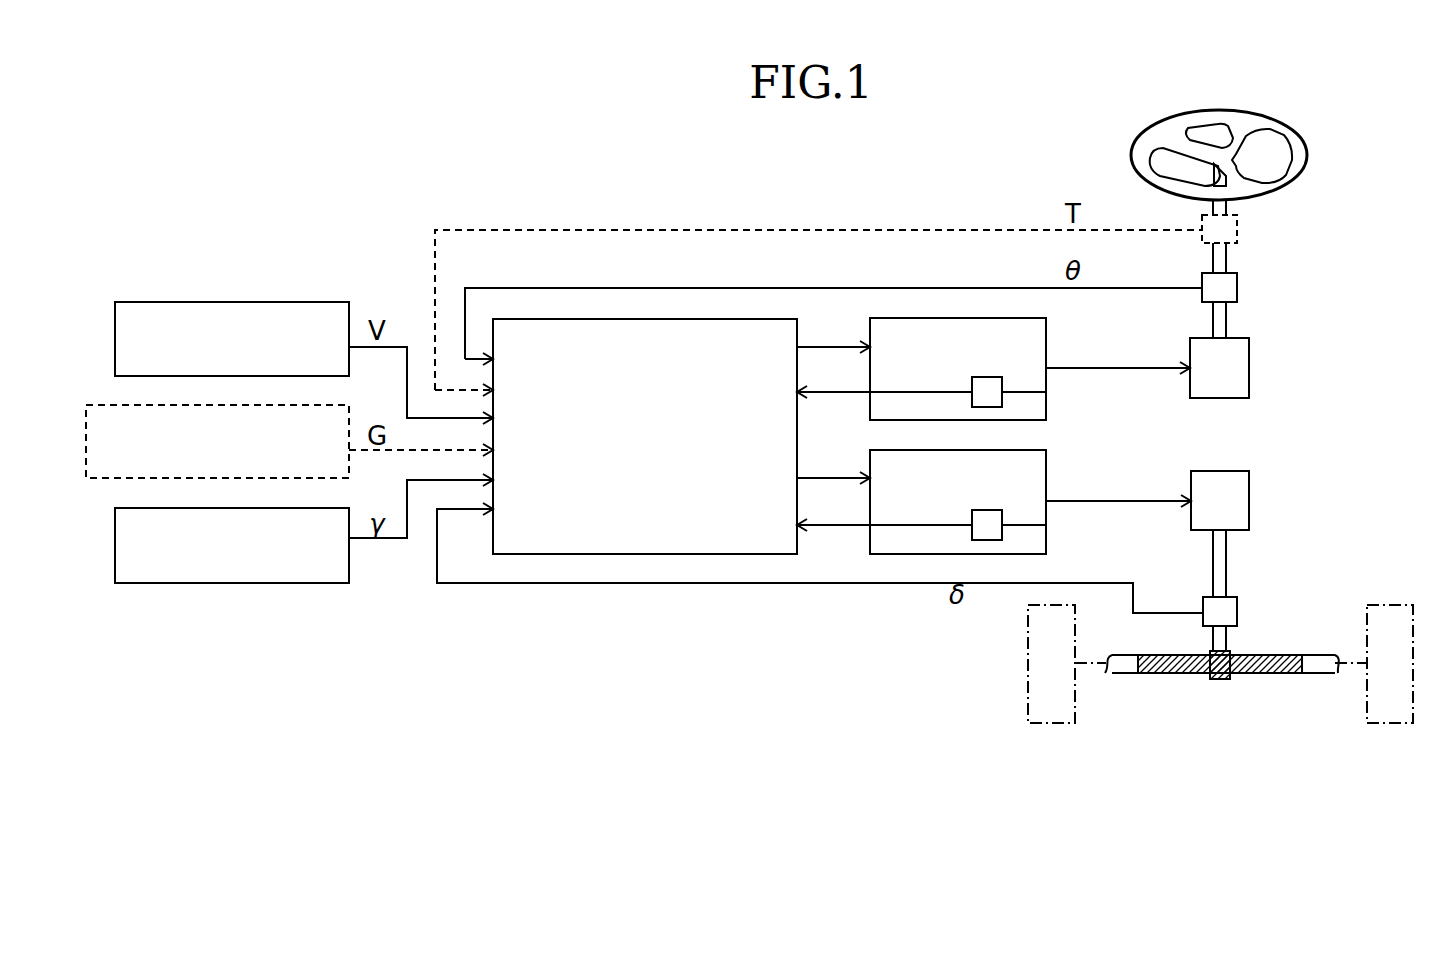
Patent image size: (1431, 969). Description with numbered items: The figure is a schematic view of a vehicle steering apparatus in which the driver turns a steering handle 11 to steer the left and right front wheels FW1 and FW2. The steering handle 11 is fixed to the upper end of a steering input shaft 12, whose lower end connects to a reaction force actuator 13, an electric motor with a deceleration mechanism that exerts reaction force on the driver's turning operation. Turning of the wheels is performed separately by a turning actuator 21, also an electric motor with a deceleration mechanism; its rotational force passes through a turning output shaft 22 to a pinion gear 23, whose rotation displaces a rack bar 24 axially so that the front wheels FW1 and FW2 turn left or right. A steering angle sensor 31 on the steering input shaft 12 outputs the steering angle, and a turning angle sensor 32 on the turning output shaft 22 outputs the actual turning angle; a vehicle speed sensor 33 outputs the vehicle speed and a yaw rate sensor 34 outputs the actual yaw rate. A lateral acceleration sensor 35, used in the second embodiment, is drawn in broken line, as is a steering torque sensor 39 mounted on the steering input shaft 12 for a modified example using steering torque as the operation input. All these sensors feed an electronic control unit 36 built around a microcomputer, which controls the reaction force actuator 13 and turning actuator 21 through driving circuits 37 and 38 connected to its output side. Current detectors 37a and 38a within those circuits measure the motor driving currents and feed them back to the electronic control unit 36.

The steering handle 11 is at (1307, 155).
The steering input shaft 12 is at (1226, 258).
The reaction force actuator 13 is at (1249, 368).
The turning actuator 21 is at (1249, 501).
The turning output shaft 22 is at (1226, 562).
The pinion gear 23 is at (1223, 679).
The rack bar 24 is at (1175, 673).
The steering angle sensor 31 is at (1237, 288).
The turning angle sensor 32 is at (1237, 614).
The vehicle speed sensor 33 is at (292, 302).
The yaw rate sensor 34 is at (292, 508).
The lateral acceleration sensor 35 is at (292, 405).
The electronic control unit 36 is at (755, 319).
The driving circuit 37 is at (1020, 318).
The current detector 37a is at (1046, 392).
The driving circuit 38 is at (1020, 450).
The current detector 38a is at (1046, 525).
The steering torque sensor 39 is at (1237, 229).
The left front wheel FW1 is at (1068, 723).
The right front wheel FW2 is at (1372, 723).